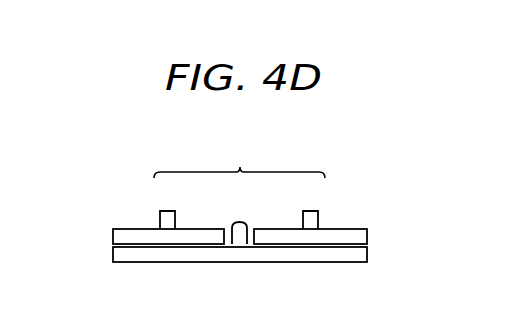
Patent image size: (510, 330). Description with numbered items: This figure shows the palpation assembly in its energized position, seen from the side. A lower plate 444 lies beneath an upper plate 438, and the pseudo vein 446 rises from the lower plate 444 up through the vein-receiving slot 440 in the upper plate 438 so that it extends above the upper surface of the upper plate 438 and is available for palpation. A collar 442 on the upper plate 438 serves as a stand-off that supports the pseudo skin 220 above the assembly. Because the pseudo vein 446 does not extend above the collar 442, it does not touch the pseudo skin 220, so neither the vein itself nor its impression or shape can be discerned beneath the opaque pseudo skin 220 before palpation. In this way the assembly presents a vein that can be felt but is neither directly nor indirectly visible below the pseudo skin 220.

The pseudo skin 220 is at (239, 158).
The upper plate 438 is at (113, 236).
The vein-receiving slot 440 is at (233, 227).
The collar 442 is at (161, 220).
The lower plate 444 is at (113, 252).
The pseudo vein 446 is at (244, 228).